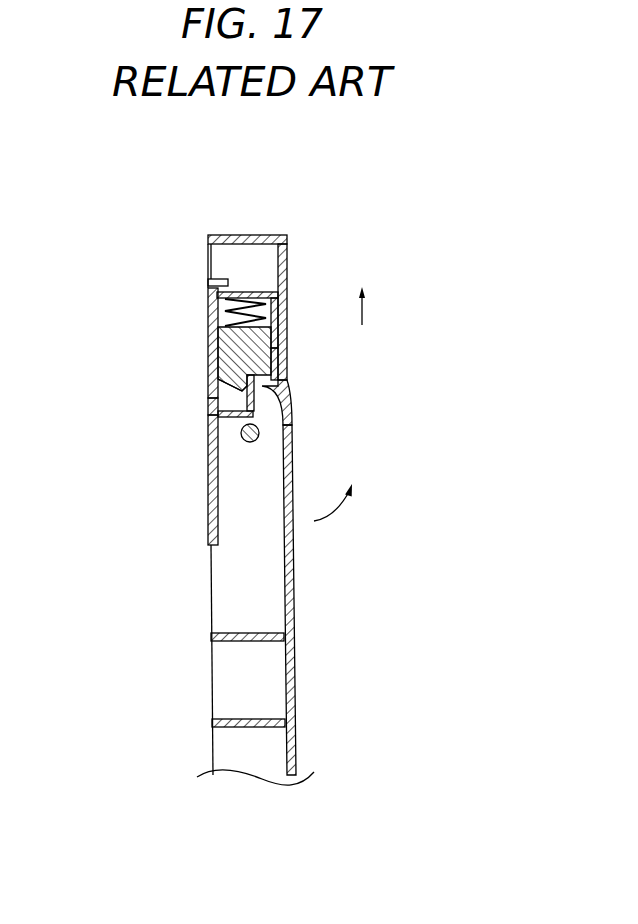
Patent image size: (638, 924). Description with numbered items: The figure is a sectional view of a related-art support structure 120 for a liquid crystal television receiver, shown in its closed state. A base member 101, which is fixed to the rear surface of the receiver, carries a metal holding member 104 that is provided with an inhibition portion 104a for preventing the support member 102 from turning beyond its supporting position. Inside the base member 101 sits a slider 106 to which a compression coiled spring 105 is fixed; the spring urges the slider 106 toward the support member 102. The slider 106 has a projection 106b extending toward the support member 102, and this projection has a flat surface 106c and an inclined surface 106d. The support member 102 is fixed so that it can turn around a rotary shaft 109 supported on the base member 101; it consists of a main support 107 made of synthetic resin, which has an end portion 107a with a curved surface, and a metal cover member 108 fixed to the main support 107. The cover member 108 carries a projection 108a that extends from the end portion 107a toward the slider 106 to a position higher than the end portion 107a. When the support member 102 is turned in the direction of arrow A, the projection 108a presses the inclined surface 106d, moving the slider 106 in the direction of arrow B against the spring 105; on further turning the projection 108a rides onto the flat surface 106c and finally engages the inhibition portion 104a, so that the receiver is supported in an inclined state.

The support structure 120 is at (309, 213).
The base member 101 is at (288, 261).
The support member 102 is at (293, 655).
The holding member 104 is at (218, 322).
The inhibition portion 104a is at (217, 387).
The compression coiled spring 105 is at (214, 297).
The slider 106 is at (281, 321).
The projection 106b is at (216, 355).
The flat surface 106c is at (217, 405).
The inclined surface 106d is at (262, 381).
The main support 107 is at (291, 548).
The end portion 107a is at (284, 388).
The cover member 108 is at (210, 500).
The projection 108a is at (258, 406).
The rotary shaft 109 is at (242, 438).